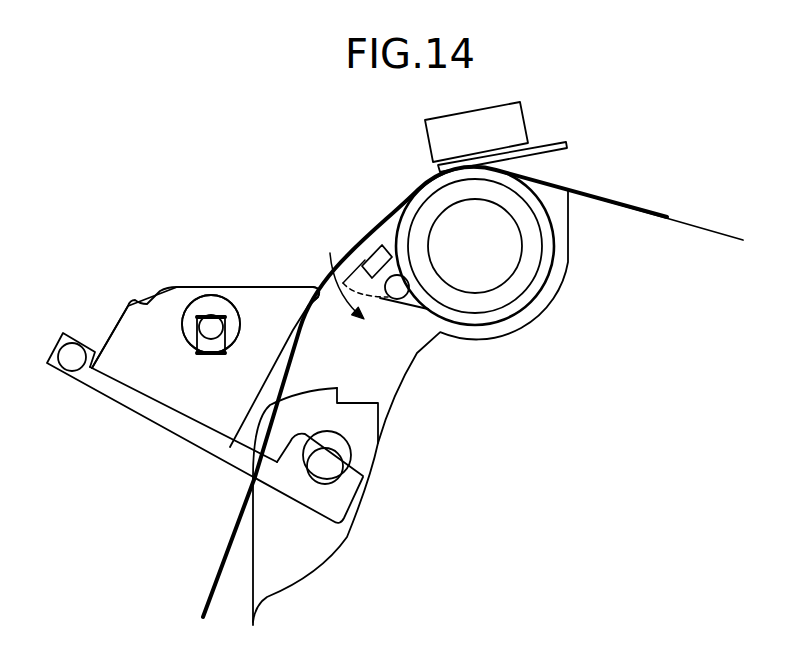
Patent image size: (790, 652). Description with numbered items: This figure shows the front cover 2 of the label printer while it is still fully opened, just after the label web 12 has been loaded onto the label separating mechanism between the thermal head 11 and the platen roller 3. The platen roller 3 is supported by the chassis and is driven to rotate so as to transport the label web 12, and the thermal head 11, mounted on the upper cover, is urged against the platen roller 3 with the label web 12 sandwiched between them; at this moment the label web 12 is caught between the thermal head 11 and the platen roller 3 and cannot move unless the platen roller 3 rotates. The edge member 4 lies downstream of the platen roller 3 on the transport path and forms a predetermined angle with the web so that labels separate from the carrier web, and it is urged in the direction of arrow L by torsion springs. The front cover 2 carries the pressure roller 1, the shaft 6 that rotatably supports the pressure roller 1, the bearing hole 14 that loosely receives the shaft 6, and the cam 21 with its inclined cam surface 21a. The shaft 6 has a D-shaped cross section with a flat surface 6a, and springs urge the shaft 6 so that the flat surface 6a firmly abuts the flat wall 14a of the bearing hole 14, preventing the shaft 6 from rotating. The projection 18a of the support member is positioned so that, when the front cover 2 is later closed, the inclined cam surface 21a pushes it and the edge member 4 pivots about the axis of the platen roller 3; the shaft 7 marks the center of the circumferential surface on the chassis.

The pressure roller 1 is at (200, 300).
The front cover 2 is at (98, 384).
The platen roller 3 is at (553, 258).
The edge member 4 is at (352, 268).
The shaft 6 is at (212, 348).
The flat surface 6a is at (215, 274).
The shaft 7 is at (330, 467).
The thermal head 11 is at (525, 110).
The label web 12 is at (613, 190).
The bearing hole 14 is at (193, 343).
The flat wall 14a is at (203, 307).
The projection 18a is at (396, 280).
The cam 21 is at (242, 297).
The inclined cam surface 21a is at (288, 287).